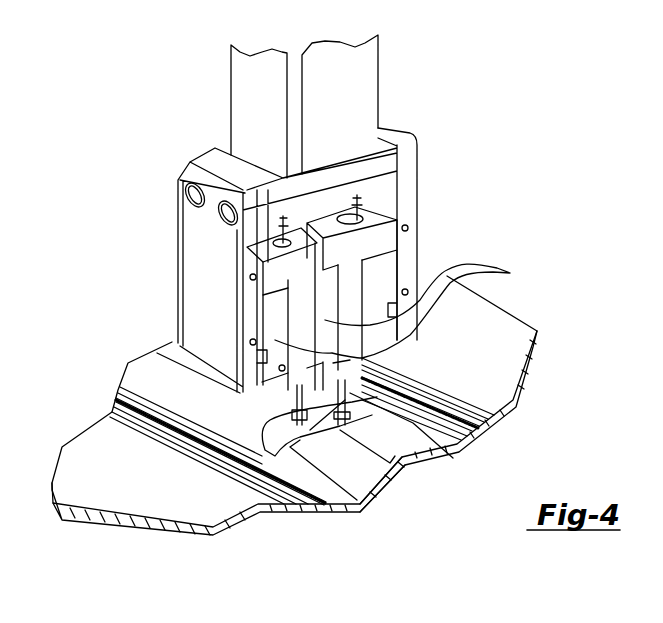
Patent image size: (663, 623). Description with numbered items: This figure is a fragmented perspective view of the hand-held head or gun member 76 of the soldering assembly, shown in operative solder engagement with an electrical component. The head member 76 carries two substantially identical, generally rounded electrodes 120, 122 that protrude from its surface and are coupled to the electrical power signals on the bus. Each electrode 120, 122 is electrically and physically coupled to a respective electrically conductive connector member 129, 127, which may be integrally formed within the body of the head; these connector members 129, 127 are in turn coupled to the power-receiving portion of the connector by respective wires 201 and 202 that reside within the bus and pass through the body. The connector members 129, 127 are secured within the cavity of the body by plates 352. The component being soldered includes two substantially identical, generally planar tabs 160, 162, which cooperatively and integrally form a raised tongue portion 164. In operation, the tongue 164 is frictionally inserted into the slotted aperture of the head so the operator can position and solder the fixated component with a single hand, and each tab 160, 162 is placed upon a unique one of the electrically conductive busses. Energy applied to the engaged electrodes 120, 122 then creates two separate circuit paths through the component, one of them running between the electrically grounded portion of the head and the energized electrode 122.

The head member 76 is at (441, 93).
The wire 201 is at (353, 208).
The connector member 129 is at (375, 243).
The plates 352 is at (510, 273).
The wire 202 is at (287, 222).
The connector member 127 is at (280, 275).
The electrode 120 is at (450, 453).
The tab 162 is at (393, 460).
The tab 160 is at (300, 497).
The electrode 122 is at (327, 408).
The tongue portion 164 is at (280, 402).